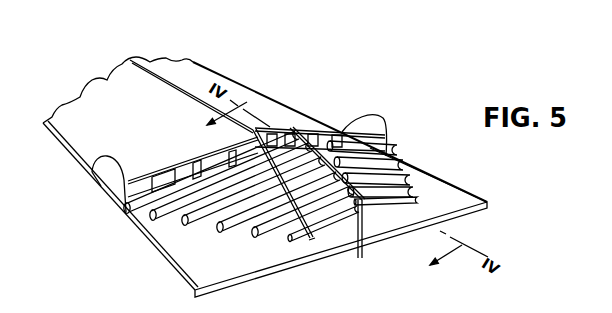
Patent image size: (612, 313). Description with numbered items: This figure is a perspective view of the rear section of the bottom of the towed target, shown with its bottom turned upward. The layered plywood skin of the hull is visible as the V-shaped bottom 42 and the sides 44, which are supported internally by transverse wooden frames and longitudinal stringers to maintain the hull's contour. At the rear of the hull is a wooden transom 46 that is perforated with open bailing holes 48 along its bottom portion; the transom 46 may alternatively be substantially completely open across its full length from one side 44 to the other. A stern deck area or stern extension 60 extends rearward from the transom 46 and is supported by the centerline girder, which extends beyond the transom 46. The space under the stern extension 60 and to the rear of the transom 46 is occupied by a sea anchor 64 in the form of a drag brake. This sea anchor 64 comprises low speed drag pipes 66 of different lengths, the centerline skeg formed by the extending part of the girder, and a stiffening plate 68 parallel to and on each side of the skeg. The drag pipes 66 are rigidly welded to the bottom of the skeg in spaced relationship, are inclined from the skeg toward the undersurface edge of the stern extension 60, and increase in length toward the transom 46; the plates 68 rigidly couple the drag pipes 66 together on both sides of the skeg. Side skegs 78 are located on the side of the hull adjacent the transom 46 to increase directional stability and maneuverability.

The V-shaped bottom 42 is at (209, 80).
The sides 44 is at (78, 162).
The transom 46 is at (158, 183).
The bailing holes 48 is at (167, 172).
The stern deck area 60 is at (316, 262).
The sea anchor 64 is at (340, 215).
The low speed drag pipes 66 is at (225, 234).
The stiffening plate 68 is at (280, 241).
The side skegs 78 is at (97, 168).